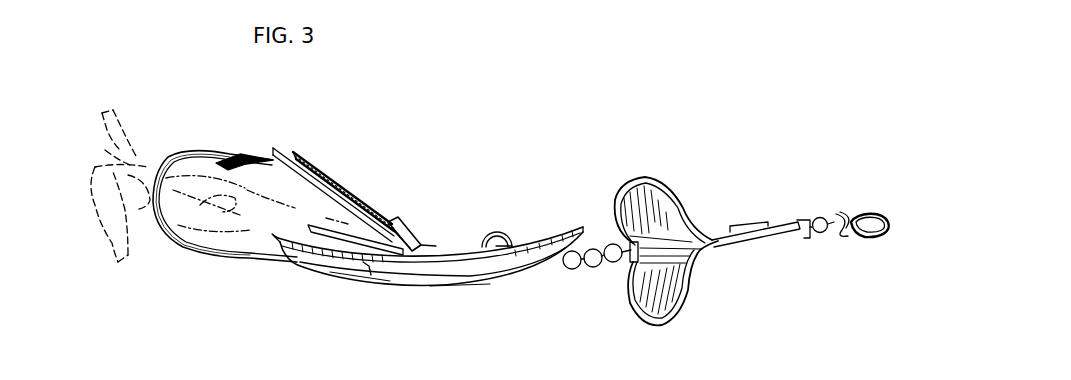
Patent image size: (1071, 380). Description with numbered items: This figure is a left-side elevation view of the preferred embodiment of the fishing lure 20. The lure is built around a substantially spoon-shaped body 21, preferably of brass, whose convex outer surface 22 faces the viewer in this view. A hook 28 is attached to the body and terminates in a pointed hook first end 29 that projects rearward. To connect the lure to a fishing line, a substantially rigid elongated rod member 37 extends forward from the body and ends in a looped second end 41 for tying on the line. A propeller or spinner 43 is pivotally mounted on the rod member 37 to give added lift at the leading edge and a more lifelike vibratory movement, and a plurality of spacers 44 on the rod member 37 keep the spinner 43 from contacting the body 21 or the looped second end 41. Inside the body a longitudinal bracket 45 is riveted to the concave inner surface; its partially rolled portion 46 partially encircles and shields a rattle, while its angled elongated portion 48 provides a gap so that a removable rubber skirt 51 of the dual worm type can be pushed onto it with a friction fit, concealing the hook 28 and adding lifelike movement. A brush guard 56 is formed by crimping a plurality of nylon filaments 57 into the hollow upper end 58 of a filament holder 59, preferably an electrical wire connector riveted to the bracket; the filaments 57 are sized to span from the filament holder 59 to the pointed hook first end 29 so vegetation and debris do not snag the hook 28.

The fishing lure 20 is at (119, 74).
The body portion 21 is at (336, 283).
The convex outer surface 22 is at (367, 272).
The hook 28 is at (219, 261).
The pointed hook first end 29 is at (237, 158).
The rod member 37 is at (845, 211).
The looped second end 41 is at (873, 217).
The spinner 43 is at (677, 183).
The spacers 44 is at (570, 270).
The bracket 45 is at (508, 231).
The partially rolled portion 46 is at (488, 241).
The elongated portion 48 is at (319, 223).
The skirt 51 is at (118, 130).
The brush guard 56 is at (334, 156).
The filaments 57 is at (318, 156).
The hollow upper end 58 is at (392, 227).
The filament holder 59 is at (421, 225).